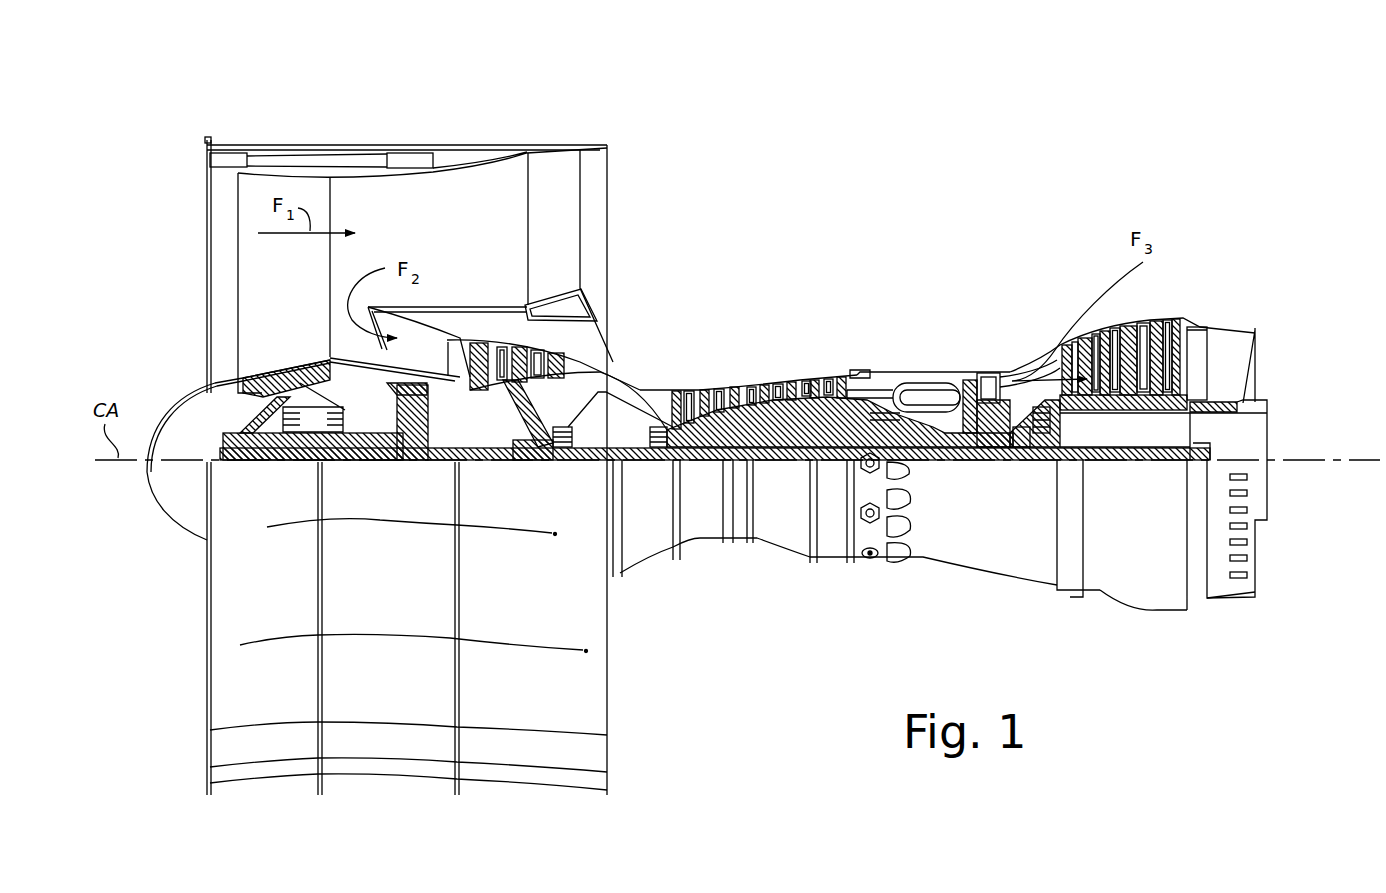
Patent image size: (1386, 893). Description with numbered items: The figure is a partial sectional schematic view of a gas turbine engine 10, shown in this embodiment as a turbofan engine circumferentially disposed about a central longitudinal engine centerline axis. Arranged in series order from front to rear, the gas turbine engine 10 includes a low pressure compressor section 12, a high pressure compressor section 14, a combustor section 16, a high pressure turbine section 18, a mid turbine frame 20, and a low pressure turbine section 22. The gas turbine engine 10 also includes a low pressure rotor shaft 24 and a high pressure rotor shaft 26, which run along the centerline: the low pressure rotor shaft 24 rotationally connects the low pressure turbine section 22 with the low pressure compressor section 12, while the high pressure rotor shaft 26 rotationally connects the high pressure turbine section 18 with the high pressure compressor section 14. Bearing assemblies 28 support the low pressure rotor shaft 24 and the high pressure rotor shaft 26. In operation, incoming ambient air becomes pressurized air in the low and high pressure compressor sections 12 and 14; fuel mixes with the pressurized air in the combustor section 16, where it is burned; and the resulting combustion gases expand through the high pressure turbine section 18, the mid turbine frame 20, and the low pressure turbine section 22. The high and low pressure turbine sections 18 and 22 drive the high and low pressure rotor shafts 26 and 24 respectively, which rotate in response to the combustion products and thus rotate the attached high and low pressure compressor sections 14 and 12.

The gas turbine engine 10 is at (218, 92).
The low pressure compressor section 12 is at (582, 340).
The high pressure compressor section 14 is at (732, 385).
The combustor section 16 is at (930, 368).
The high pressure turbine section 18 is at (990, 363).
The mid turbine frame 20 is at (1033, 362).
The low pressure turbine section 22 is at (1117, 328).
The low pressure rotor shaft 24 is at (636, 462).
The high pressure rotor shaft 26 is at (942, 445).
The bearing assemblies 28 is at (563, 456).